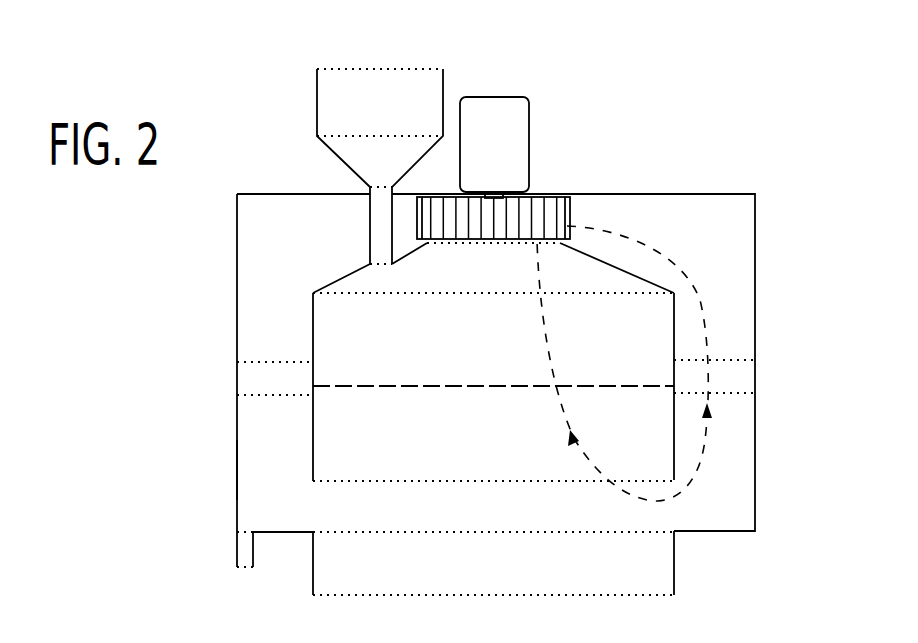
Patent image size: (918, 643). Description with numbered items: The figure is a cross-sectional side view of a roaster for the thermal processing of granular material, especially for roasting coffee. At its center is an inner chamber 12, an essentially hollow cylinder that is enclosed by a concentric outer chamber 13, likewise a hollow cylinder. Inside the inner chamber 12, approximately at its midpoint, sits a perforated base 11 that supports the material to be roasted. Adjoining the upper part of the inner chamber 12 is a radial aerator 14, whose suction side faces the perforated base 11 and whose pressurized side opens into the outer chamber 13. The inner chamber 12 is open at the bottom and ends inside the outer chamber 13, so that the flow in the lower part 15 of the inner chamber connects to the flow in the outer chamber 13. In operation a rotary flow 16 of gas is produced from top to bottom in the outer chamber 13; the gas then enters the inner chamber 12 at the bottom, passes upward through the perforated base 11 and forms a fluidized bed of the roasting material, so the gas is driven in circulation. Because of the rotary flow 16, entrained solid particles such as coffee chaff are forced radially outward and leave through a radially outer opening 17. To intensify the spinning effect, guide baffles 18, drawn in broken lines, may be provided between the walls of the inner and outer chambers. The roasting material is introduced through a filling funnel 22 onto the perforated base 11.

The perforated base 11 is at (647, 387).
The inner chamber 12 is at (647, 317).
The outer chamber 13 is at (263, 325).
The radial aerator 14 is at (560, 166).
The lower part of the inner chamber 15 is at (290, 470).
The rotary flow 16 is at (702, 317).
The radially outer opening 17 is at (240, 555).
The guide baffles 18 is at (253, 385).
The filling funnel 22 is at (330, 103).